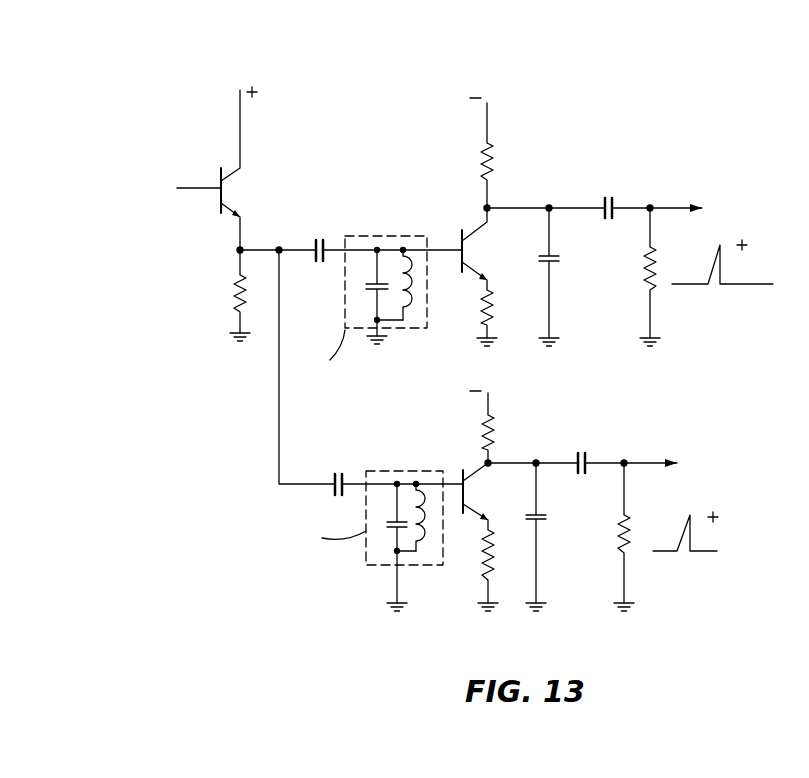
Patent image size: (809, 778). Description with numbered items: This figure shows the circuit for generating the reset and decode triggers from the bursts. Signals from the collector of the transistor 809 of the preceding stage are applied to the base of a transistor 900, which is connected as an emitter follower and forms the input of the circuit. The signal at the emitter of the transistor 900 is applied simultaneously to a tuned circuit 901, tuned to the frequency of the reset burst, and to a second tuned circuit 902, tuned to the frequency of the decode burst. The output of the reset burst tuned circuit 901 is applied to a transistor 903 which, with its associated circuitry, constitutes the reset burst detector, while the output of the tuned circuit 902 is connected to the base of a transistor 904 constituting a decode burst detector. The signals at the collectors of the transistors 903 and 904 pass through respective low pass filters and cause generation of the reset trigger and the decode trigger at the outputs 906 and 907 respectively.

The transistor 809 is at (193, 189).
The transistor 900 is at (243, 135).
The tuned circuit 901 is at (400, 235).
The second tuned circuit 902 is at (437, 455).
The transistor 903 is at (460, 244).
The transistor 904 is at (506, 501).
The first output 906 is at (637, 258).
The second output 907 is at (636, 523).